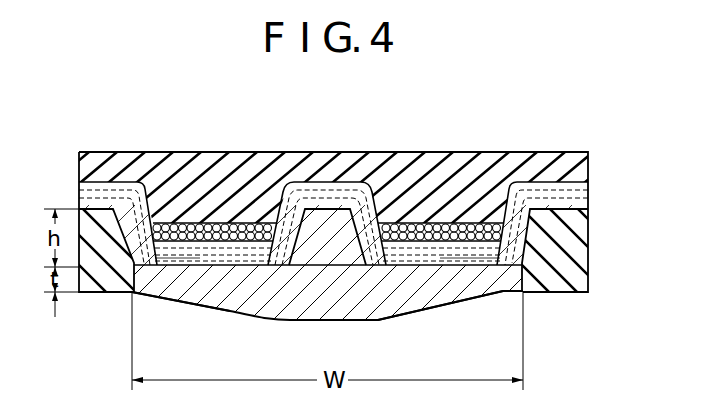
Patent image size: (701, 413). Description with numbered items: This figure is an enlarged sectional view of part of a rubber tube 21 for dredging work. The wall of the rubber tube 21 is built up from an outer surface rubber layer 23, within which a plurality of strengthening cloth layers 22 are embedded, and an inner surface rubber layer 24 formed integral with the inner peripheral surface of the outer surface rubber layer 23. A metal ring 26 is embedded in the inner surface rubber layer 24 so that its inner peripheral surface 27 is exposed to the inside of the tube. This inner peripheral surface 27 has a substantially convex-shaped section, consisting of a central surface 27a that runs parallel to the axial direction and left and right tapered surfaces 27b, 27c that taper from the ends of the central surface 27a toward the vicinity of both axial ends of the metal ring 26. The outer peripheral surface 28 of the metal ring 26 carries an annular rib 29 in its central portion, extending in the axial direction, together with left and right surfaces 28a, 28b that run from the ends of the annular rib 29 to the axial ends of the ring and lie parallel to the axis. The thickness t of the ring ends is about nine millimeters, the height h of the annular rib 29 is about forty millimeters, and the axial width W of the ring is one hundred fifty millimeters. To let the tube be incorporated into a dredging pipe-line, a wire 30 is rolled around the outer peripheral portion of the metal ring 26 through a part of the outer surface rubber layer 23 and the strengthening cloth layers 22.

The rubber tube 21 is at (141, 149).
The strengthening cloth layers 22 is at (80, 197).
The outer surface rubber layer 23 is at (265, 166).
The inner surface rubber layer 24 is at (97, 283).
The metal ring 26 is at (358, 302).
The inner peripheral surface 27 is at (270, 322).
The central surface 27a is at (325, 321).
The left tapered surface 27b is at (220, 304).
The right tapered surface 27c is at (423, 313).
The outer peripheral surface 28 is at (409, 262).
The left surface 28a is at (170, 258).
The right surface 28b is at (455, 258).
The annular rib 29 is at (333, 215).
The wire 30 is at (218, 229).